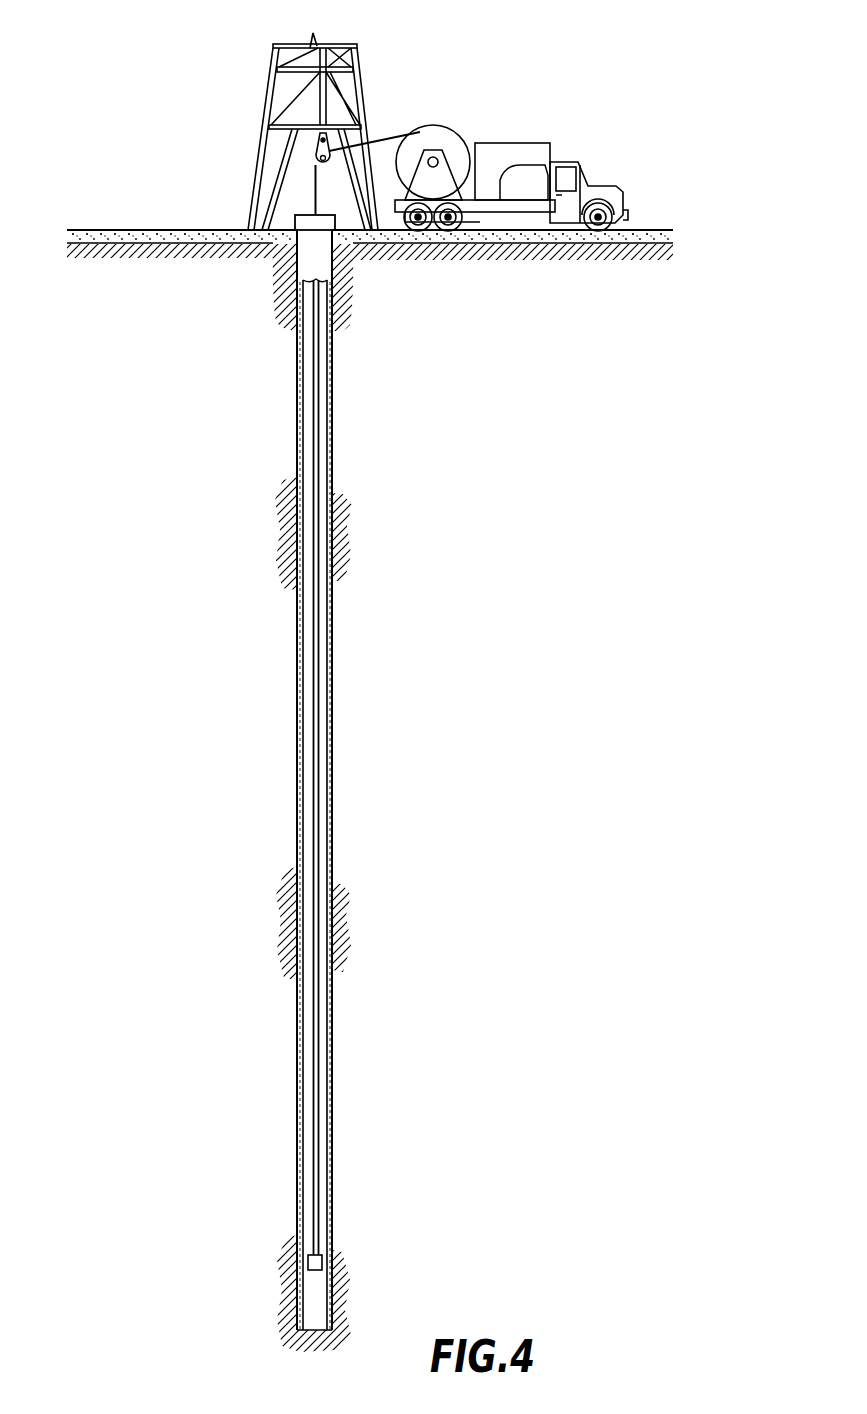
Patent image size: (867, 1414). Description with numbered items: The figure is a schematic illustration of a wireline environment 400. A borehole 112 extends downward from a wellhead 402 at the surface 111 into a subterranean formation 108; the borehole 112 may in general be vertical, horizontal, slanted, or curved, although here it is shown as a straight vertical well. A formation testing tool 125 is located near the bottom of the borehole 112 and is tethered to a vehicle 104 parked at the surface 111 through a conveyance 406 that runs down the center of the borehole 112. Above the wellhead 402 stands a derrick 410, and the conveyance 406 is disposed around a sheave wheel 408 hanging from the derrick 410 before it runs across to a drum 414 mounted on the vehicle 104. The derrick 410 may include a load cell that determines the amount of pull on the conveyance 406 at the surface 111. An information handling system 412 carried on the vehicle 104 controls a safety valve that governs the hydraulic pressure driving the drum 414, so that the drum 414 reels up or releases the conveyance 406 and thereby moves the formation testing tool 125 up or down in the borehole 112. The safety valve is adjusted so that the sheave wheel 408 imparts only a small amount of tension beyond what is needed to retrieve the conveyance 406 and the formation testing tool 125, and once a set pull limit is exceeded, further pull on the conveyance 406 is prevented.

The wireline environment 400 is at (588, 64).
The truck 104 is at (553, 145).
The surface 111 is at (127, 229).
The borehole 112 is at (332, 380).
The subterranean formation 108 is at (260, 1056).
The formation testing tool 125 is at (323, 1262).
The wellhead 402 is at (299, 214).
The conveyance 406 is at (313, 633).
The sheave wheel 408 is at (314, 150).
The derrick 410 is at (275, 67).
The information handling system 412 is at (530, 193).
The drum 414 is at (433, 124).